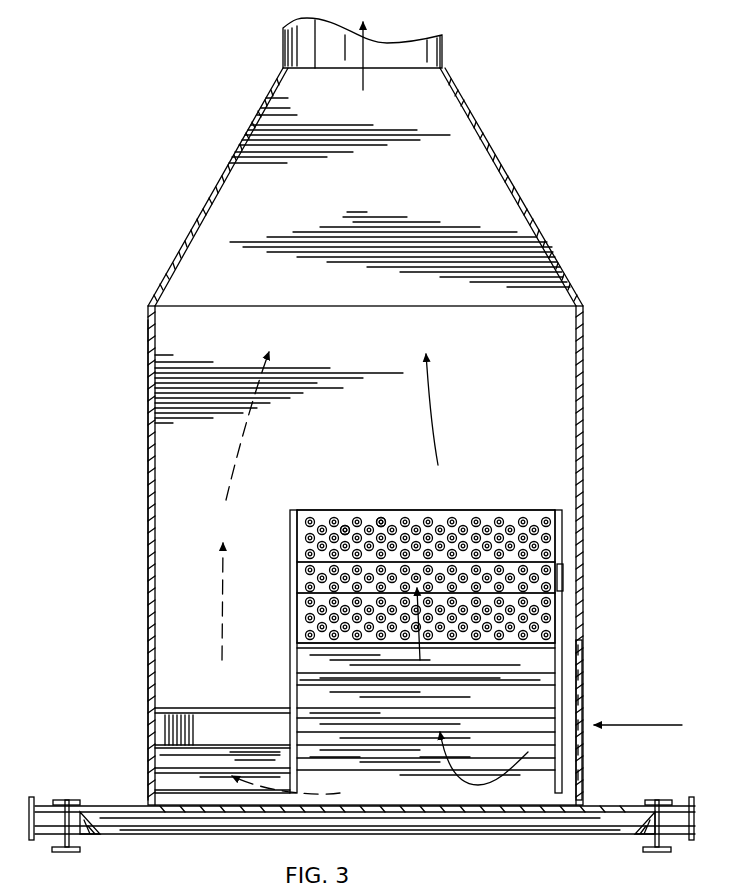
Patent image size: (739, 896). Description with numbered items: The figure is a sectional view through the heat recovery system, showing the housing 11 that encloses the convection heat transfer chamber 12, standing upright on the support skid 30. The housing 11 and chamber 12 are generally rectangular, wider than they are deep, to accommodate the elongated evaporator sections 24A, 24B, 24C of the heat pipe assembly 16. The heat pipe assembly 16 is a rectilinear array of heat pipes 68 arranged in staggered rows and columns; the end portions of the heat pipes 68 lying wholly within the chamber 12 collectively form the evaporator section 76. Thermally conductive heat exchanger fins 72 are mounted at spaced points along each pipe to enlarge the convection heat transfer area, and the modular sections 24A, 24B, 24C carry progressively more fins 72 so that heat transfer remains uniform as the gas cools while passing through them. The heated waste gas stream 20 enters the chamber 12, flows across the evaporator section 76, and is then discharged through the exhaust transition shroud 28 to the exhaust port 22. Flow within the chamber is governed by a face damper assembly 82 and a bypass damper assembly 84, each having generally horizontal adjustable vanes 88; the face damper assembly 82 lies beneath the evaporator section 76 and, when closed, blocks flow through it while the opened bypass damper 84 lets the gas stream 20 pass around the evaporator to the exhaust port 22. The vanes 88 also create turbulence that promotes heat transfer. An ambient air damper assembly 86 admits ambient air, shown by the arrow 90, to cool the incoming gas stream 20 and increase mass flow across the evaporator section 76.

The housing 11 is at (555, 350).
The convection heat transfer chamber 12 is at (148, 360).
The heat pipe assembly 16 is at (494, 500).
The heated waste gas stream 20 is at (360, 77).
The exhaust port 22 is at (445, 47).
The evaporator section 24A is at (290, 625).
The evaporator section 24B is at (290, 578).
The evaporator section 24C is at (290, 535).
The exhaust transition shroud 28 is at (520, 200).
The support skid 30 is at (60, 800).
The heat pipe 68 is at (380, 517).
The heat exchanger fin 72 is at (408, 510).
The evaporator section 76 is at (550, 577).
The face damper assembly 82 is at (537, 703).
The bypass damper assembly 84 is at (224, 743).
The ambient air damper assembly 86 is at (584, 665).
The adjustable vanes 88 is at (407, 702).
The ambient air flow 90 is at (643, 725).